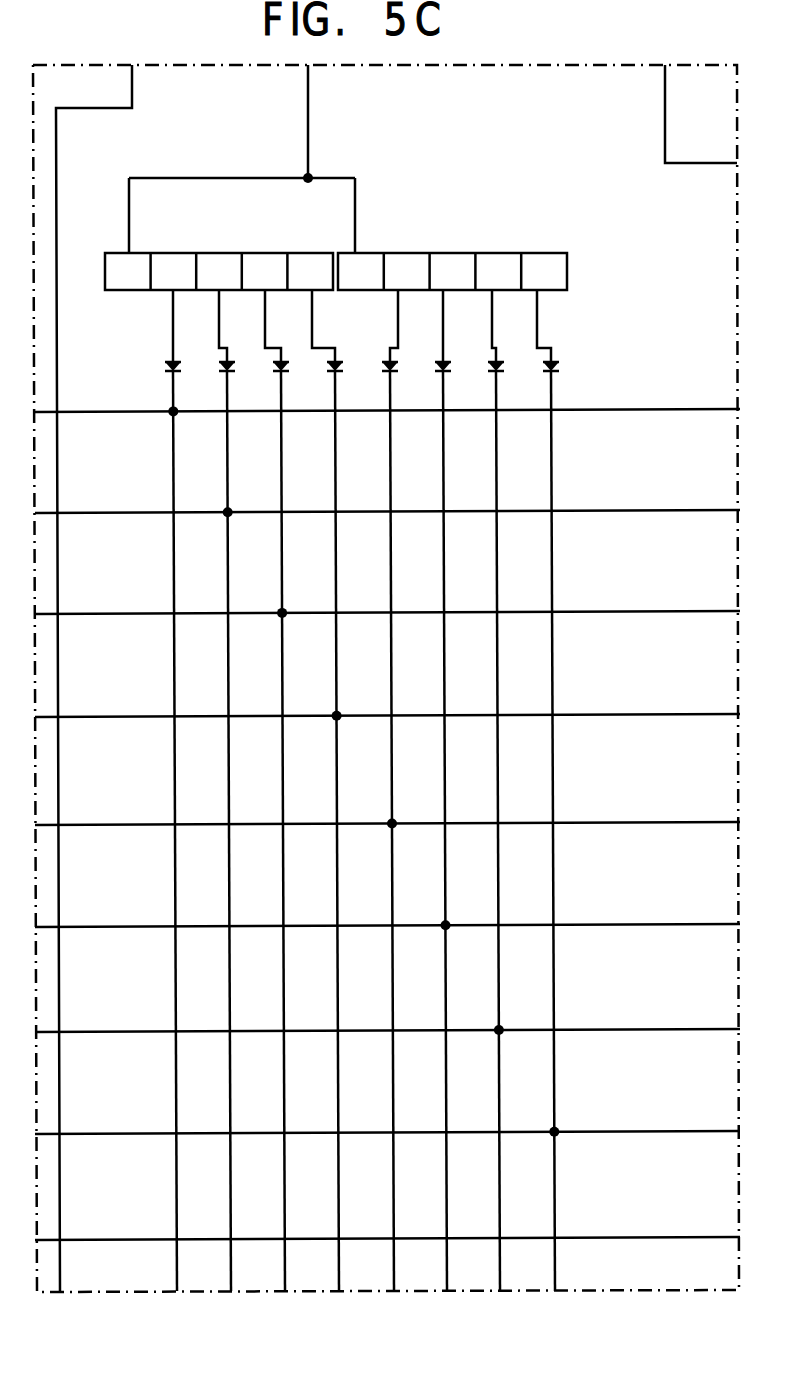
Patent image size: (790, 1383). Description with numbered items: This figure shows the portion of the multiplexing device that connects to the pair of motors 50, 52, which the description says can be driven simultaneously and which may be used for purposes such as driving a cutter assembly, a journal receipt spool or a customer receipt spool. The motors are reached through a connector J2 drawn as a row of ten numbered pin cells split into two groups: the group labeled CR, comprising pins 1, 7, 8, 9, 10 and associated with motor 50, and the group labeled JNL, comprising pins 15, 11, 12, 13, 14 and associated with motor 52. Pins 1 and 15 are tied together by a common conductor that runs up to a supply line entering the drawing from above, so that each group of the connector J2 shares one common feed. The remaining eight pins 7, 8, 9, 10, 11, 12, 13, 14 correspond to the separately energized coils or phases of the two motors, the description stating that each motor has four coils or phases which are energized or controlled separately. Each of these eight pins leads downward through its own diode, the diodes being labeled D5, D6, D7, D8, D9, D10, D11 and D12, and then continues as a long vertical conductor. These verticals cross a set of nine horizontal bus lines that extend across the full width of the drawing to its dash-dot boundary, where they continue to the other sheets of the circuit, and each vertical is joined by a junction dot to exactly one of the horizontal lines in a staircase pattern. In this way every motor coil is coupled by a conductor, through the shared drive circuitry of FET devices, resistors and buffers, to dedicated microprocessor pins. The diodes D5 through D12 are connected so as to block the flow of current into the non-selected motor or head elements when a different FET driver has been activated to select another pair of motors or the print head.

The motor 50 is at (335, 251).
The motor 52 is at (468, 249).
The connector J2 is at (110, 252).
The CR signal group CR is at (219, 254).
The JNL signal group JNL is at (562, 229).
The connector J2 pin 1 (common feed) 1 is at (128, 271).
The connector J2 pin 7 is at (174, 271).
The connector J2 pin 8 is at (219, 271).
The connector J2 pin 9 is at (265, 271).
The connector J2 pin 10 is at (310, 271).
The connector J2 pin 15 (common feed) 15 is at (361, 271).
The connector J2 pin 11 is at (407, 271).
The connector J2 pin 12 is at (453, 271).
The connector J2 pin 13 is at (498, 271).
The connector J2 pin 14 is at (544, 271).
The diode D5 is at (157, 790).
The diode D6 is at (243, 790).
The diode D7 is at (294, 790).
The diode D8 is at (346, 790).
The diode D9 is at (408, 790).
The diode D10 is at (468, 790).
The diode D11 is at (522, 790).
The diode D12 is at (574, 790).